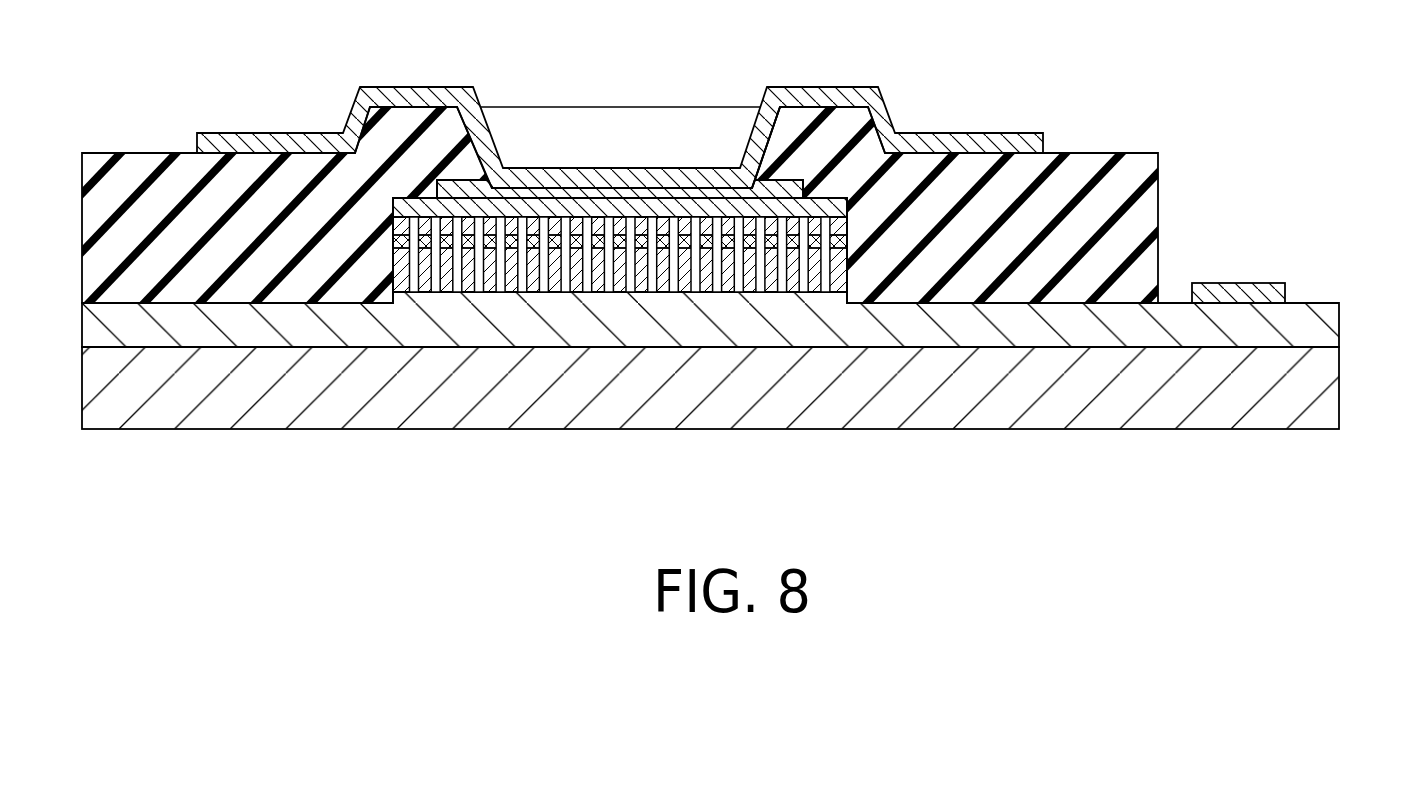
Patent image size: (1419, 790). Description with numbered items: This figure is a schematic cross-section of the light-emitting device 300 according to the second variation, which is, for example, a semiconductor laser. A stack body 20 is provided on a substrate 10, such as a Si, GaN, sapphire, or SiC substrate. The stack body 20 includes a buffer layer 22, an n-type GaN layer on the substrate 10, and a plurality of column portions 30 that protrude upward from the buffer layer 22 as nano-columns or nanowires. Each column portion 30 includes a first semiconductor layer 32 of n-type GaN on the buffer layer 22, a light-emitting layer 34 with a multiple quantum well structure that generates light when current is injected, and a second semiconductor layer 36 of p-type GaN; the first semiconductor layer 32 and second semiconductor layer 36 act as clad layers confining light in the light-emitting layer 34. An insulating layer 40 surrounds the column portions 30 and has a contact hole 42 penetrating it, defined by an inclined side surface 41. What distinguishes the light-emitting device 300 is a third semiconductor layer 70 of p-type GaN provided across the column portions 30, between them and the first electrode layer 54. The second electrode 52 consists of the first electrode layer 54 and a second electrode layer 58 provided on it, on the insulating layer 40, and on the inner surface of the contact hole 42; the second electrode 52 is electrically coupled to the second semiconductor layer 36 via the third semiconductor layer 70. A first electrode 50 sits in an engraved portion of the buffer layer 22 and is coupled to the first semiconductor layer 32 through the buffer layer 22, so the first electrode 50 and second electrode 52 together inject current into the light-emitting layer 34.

The substrate 10 is at (1300, 390).
The buffer layer 22 is at (1302, 332).
The stack body 20 is at (1074, 139).
The column portions 30 is at (822, 335).
The first semiconductor layer 32 is at (795, 268).
The light-emitting layer 34 is at (813, 245).
The second semiconductor layer 36 is at (847, 222).
The insulating layer 40 is at (842, 120).
The side surface 41 is at (751, 132).
The contact hole 42 is at (535, 130).
The first electrode 50 is at (1265, 295).
The second electrode 52 is at (587, 61).
The first electrode layer 54 is at (643, 195).
The second electrode layer 58 is at (590, 175).
The third semiconductor layer 70 is at (709, 205).
The light-emitting device 300 is at (1161, 125).